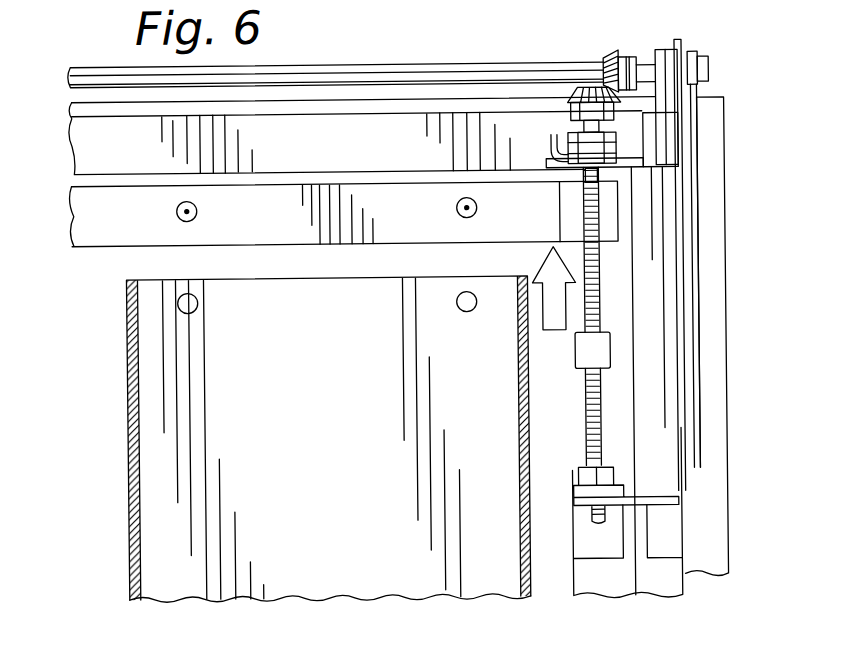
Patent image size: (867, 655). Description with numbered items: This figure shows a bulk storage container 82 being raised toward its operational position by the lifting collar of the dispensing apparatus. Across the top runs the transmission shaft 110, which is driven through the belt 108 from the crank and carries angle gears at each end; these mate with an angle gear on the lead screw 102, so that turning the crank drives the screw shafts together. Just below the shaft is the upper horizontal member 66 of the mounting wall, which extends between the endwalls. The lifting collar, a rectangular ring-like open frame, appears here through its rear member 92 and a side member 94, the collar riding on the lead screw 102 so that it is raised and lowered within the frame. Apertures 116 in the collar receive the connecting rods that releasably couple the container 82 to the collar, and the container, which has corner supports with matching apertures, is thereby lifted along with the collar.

The transmission shaft 110 is at (369, 36).
The upper horizontal member 66 is at (76, 139).
The rear member 92 is at (77, 219).
The apertures 116 is at (193, 218).
The side member 94 is at (571, 211).
The bulk storage container 82 is at (298, 586).
The lead screw 102 is at (589, 397).
The belt 108 is at (701, 250).